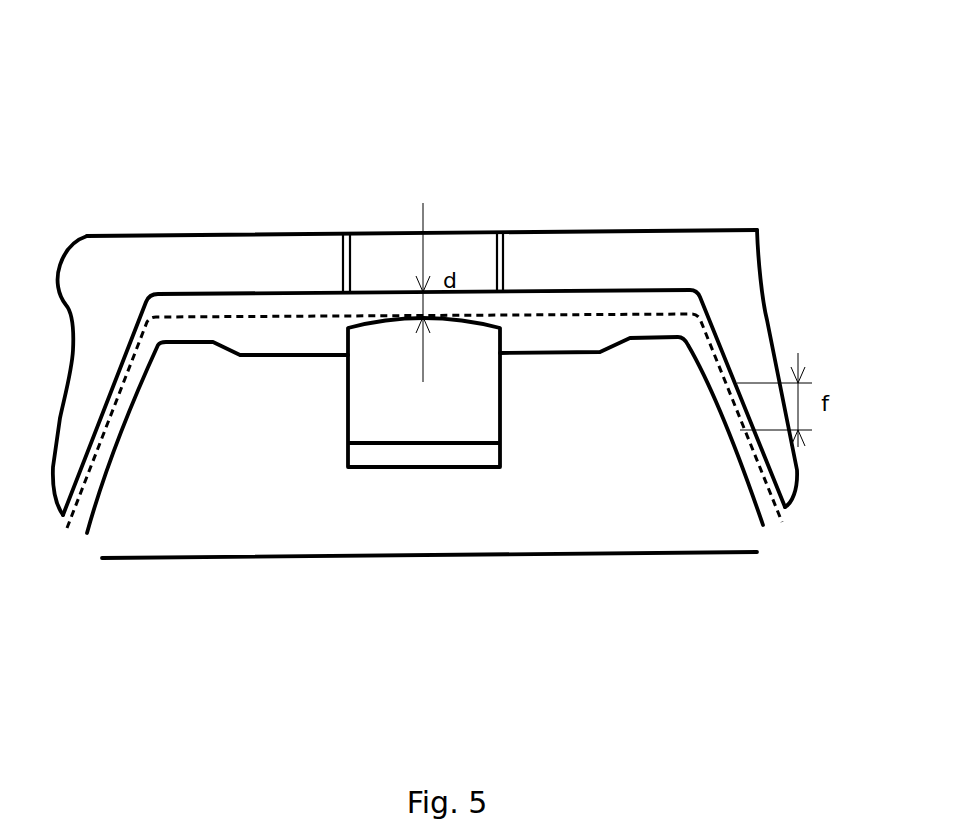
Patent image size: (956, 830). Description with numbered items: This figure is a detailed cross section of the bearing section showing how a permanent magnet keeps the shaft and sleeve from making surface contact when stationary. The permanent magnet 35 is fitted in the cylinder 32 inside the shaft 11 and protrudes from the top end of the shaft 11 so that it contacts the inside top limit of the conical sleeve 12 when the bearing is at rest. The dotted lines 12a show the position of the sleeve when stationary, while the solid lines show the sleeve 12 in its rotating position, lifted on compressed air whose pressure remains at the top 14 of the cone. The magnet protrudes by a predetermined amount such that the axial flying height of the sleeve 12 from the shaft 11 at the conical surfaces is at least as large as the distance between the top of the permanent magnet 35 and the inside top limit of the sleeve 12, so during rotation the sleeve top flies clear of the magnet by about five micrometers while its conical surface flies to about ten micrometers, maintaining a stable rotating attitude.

The shaft 11 is at (187, 447).
The sleeve 12 is at (103, 333).
The dotted lines 12a is at (210, 318).
The top of the cone 14 is at (380, 302).
The cylinder 32 is at (473, 455).
The permanent magnet 35 is at (400, 418).